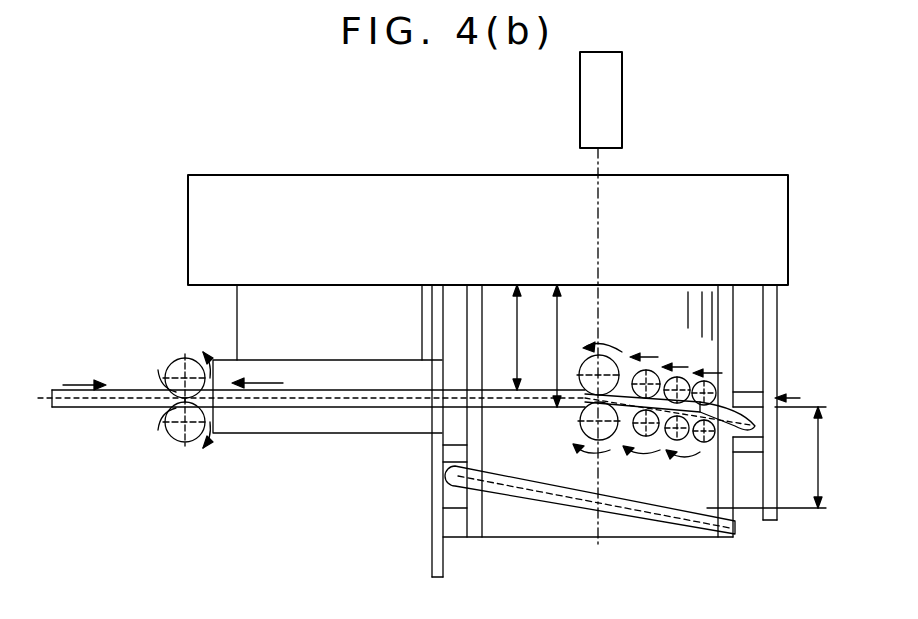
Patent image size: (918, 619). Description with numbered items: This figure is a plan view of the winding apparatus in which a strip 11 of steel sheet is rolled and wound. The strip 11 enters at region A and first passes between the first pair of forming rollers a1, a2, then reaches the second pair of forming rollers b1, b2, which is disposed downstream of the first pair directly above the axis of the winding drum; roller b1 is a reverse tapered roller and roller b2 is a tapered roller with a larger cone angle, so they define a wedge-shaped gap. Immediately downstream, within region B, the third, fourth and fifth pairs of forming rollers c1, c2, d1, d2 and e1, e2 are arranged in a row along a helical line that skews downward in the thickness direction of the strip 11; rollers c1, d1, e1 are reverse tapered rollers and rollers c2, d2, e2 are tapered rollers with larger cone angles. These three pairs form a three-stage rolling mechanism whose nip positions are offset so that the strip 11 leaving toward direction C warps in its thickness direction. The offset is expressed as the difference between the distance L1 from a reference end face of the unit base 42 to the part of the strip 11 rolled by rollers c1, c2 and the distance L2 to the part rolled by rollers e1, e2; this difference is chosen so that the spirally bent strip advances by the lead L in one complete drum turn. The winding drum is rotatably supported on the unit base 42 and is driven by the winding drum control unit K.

The winding drum control unit K is at (614, 98).
The unit base 42 is at (780, 232).
The strip 11 is at (362, 392).
The feed section A is at (252, 384).
The first pair of forming rollers a1 is at (168, 442).
The first pair of forming rollers a2 is at (168, 360).
The distance L1 is at (506, 337).
The distance L2 is at (545, 346).
The forming roller group B is at (647, 391).
The reverse tapered roller b1 is at (594, 440).
The tapered roller b2 is at (585, 393).
The reverse tapered roller c1 is at (642, 436).
The tapered roller c2 is at (638, 398).
The reverse tapered roller d1 is at (670, 440).
The tapered roller d2 is at (672, 404).
The reverse tapered roller e1 is at (701, 442).
The tapered roller e2 is at (712, 406).
The discharge direction C is at (793, 387).
The lead L is at (774, 457).